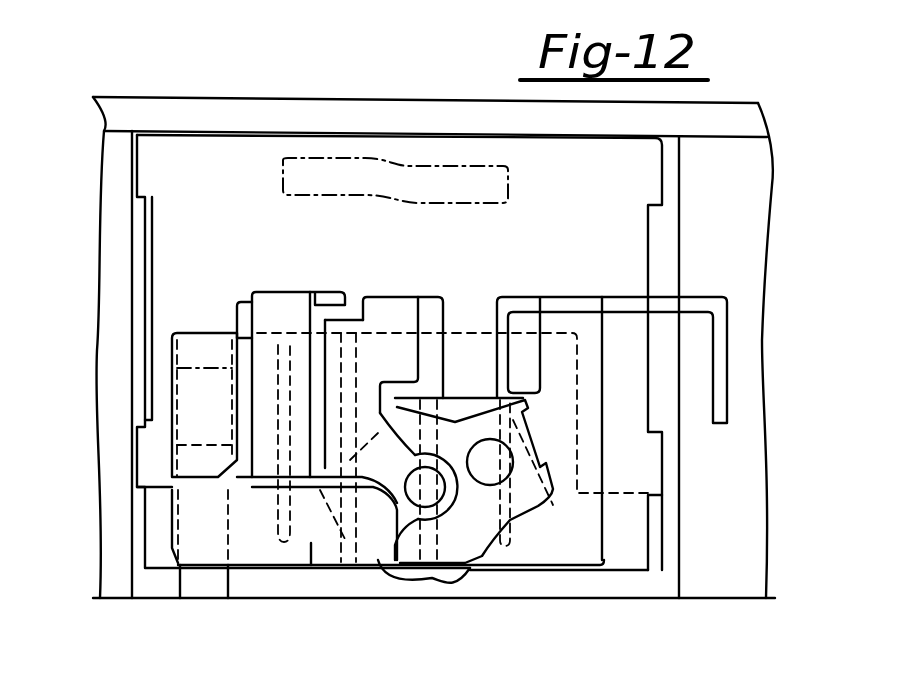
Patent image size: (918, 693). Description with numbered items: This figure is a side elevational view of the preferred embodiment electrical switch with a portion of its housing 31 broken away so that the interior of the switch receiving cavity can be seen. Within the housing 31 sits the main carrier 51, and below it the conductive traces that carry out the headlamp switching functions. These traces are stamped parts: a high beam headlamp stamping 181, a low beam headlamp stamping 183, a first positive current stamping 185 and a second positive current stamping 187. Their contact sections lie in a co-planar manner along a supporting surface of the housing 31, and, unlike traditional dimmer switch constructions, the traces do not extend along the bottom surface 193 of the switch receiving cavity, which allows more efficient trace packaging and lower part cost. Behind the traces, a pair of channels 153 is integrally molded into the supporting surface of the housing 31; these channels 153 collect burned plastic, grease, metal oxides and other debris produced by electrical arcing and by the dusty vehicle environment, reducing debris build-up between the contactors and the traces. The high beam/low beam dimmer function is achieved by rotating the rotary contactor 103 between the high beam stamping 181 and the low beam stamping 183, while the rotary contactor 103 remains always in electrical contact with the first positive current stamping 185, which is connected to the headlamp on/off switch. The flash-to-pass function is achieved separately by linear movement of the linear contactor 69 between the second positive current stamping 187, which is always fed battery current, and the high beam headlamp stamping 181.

The housing 31 is at (732, 223).
The main carrier 51 is at (214, 152).
The linear contactor 69 is at (193, 353).
The rotary contactor 103 is at (480, 530).
The channels 153 is at (200, 585).
The high beam headlamp stamping 181 is at (312, 547).
The low beam headlamp stamping 183 is at (397, 315).
The first positive current stamping 185 is at (545, 532).
The second positive current stamping 187 is at (172, 463).
The bottom surface 193 is at (608, 560).